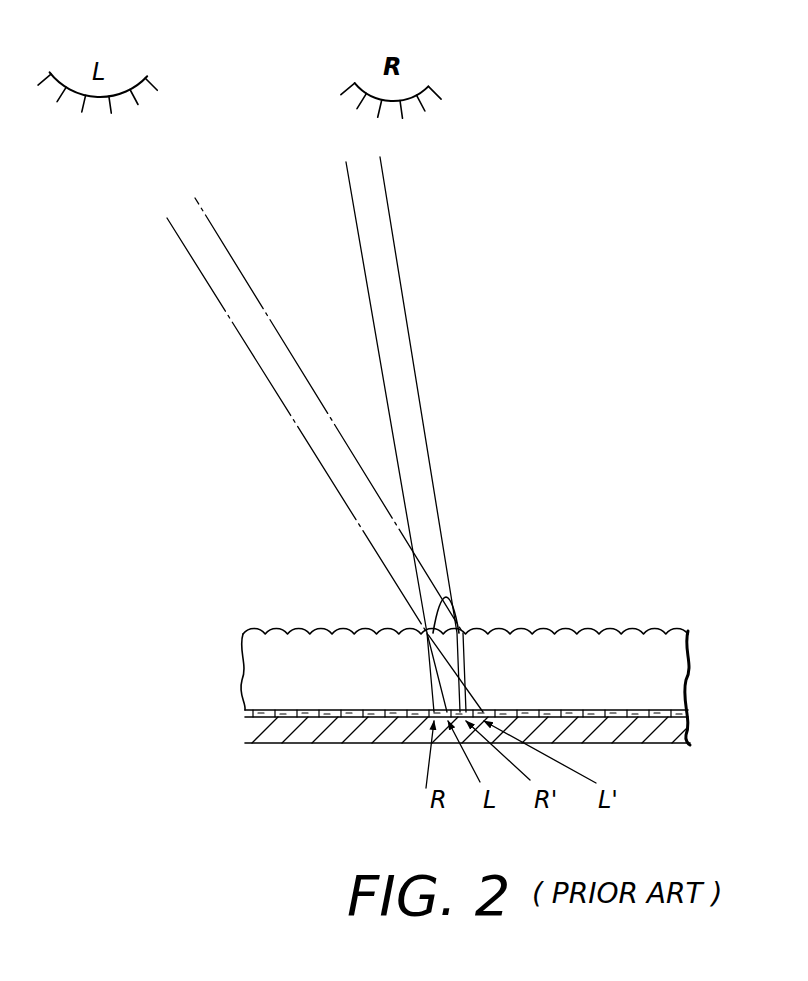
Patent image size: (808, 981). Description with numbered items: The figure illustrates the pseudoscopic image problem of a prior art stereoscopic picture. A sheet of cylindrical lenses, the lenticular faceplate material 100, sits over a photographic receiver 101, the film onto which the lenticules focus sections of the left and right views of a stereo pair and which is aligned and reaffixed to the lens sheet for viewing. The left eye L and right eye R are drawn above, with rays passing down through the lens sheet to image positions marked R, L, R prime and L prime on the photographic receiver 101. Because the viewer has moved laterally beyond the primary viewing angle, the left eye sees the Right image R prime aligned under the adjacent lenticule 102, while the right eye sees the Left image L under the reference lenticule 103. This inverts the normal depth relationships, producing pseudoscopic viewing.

The lenticular faceplate material 100 is at (524, 646).
The photographic receiver 101 is at (702, 712).
The adjacent lenticule 102 is at (470, 628).
The reference lenticule 103 is at (451, 598).